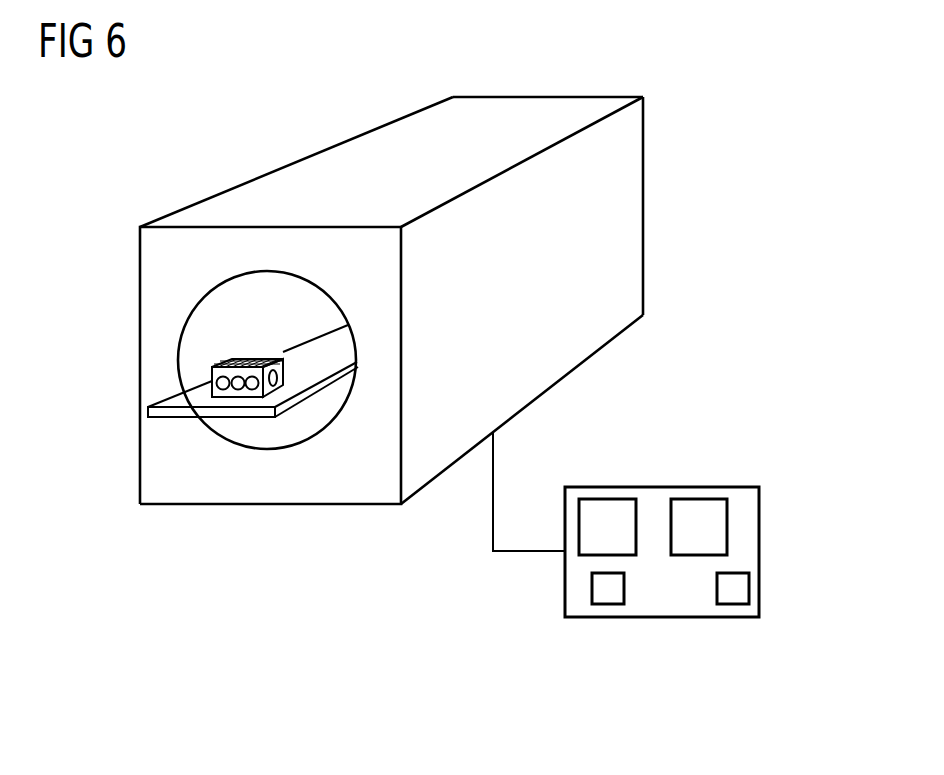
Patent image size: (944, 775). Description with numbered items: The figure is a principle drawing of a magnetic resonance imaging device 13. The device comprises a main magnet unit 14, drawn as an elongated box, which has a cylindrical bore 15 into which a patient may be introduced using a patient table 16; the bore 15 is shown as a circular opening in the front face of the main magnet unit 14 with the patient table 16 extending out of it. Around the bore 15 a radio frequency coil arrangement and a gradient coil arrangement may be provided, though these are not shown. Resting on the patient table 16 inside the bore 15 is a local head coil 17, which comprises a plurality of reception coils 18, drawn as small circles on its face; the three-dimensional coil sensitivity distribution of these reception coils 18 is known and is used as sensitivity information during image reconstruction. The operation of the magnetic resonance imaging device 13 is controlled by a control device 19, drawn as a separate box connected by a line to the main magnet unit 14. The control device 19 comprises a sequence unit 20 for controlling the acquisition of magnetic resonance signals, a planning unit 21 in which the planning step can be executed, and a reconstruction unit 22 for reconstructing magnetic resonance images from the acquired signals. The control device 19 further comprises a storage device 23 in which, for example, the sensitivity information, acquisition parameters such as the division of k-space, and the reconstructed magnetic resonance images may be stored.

The magnetic resonance imaging device 13 is at (175, 165).
The main magnet unit 14 is at (350, 158).
The cylindrical bore 15 is at (223, 320).
The patient table 16 is at (177, 420).
The local head coil 17 is at (210, 377).
The reception coils 18 is at (253, 392).
The control device 19 is at (661, 487).
The sequence unit 20 is at (606, 498).
The planning unit 21 is at (608, 606).
The reconstruction unit 22 is at (711, 498).
The storage device 23 is at (735, 606).